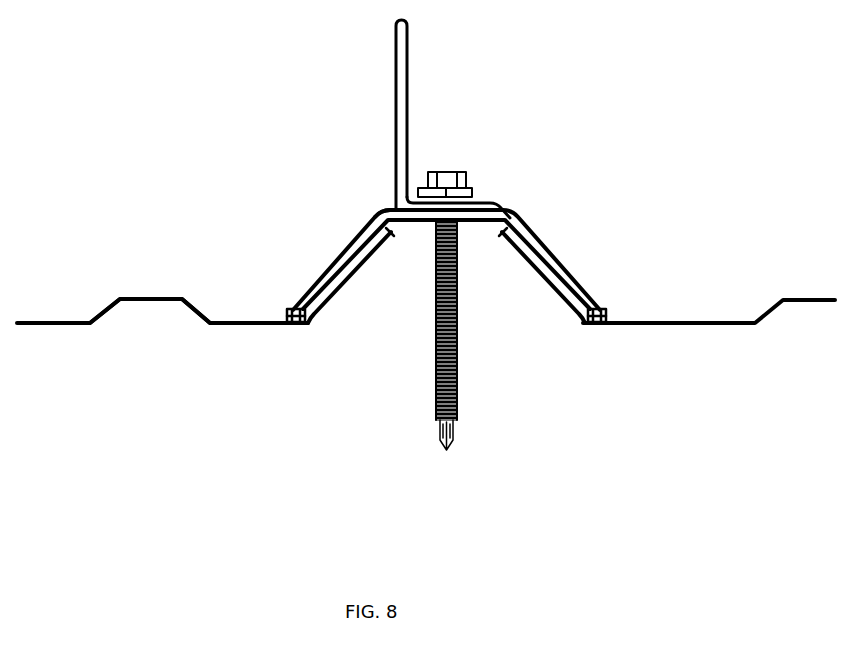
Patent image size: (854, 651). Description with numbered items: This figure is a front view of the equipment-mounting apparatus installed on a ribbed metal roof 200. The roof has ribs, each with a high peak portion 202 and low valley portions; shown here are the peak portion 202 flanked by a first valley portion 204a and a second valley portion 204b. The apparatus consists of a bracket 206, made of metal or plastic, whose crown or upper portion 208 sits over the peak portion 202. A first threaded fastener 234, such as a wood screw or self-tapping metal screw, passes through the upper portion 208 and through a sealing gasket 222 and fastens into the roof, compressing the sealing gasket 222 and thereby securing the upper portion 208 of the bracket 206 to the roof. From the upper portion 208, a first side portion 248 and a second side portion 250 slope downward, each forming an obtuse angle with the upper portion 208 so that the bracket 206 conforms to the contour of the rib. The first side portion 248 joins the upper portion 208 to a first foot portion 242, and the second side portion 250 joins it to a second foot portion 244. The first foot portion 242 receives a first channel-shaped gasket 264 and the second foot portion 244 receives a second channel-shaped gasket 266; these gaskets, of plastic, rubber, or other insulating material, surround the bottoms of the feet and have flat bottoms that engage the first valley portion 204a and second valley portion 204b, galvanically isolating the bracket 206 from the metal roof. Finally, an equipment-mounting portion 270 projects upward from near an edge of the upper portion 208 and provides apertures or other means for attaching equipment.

The ribbed metal roof 200 is at (165, 278).
The peak portion 202 is at (422, 232).
The first valley portion 204a is at (252, 324).
The second valley portion 204b is at (675, 325).
The bracket 206 is at (401, 116).
The upper portion 208 is at (493, 205).
The sealing gasket 222 is at (390, 213).
The first threaded fastener 234 is at (445, 172).
The first foot portion 242 is at (296, 306).
The second foot portion 244 is at (599, 306).
The first side portion 248 is at (323, 265).
The second side portion 250 is at (565, 262).
The first channel-shaped gasket 264 is at (287, 312).
The second channel-shaped gasket 266 is at (606, 314).
The equipment-mounting portion 270 is at (396, 116).